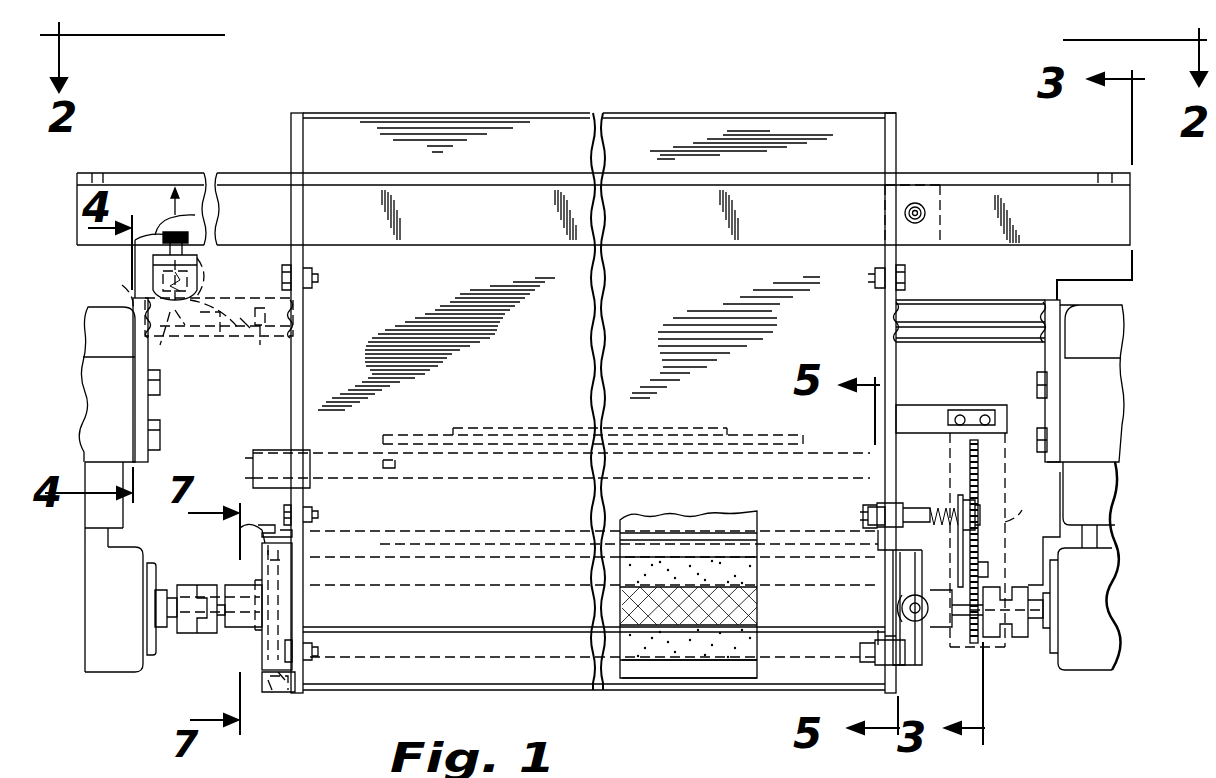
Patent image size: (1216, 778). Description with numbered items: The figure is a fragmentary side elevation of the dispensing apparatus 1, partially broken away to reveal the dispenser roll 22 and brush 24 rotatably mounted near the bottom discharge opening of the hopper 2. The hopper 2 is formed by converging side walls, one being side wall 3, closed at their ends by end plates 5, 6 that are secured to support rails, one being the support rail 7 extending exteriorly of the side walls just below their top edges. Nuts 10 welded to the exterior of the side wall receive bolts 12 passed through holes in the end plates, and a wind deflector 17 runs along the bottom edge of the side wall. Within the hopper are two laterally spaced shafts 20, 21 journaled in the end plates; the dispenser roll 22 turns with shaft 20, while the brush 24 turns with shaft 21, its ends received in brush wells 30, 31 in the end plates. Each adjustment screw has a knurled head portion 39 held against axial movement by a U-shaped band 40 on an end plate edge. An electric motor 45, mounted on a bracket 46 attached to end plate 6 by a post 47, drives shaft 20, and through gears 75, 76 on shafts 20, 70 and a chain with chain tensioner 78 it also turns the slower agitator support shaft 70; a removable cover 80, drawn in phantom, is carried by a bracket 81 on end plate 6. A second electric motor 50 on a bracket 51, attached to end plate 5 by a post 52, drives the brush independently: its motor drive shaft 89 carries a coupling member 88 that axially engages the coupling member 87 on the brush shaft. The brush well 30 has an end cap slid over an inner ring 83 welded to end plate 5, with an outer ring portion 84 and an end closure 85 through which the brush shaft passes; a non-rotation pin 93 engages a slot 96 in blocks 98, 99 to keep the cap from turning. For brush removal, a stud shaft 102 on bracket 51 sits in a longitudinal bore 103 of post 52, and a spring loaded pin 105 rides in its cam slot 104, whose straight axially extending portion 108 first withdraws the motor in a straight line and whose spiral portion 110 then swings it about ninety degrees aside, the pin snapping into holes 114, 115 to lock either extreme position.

The dispensing apparatus 1 is at (398, 113).
The hopper 2 is at (868, 160).
The side wall 3 is at (683, 125).
The end plate 5 is at (291, 407).
The end plate 6 is at (896, 367).
The support rail 7 is at (1033, 190).
The nut 10 is at (308, 268).
The bolt 12 is at (282, 272).
The wind deflector 17 is at (415, 680).
The shaft 20 is at (960, 645).
The shaft 21 is at (218, 630).
The dispenser roll 22 is at (695, 618).
The brush 24 is at (722, 652).
The brush well 30 is at (262, 660).
The brush well 31 is at (930, 652).
The knurled head portion 39 is at (887, 628).
The U-shaped band 40 is at (890, 610).
The electric motor 45 is at (1118, 393).
The bracket 46 is at (1060, 325).
The post 47 is at (962, 300).
The second electric motor 50 is at (95, 375).
The bracket 51 is at (133, 280).
The post 52 is at (215, 345).
The agitator support shaft 70 is at (332, 458).
The gear 75 is at (988, 648).
The gear 76 is at (990, 460).
The chain tensioner 78 is at (987, 522).
The removable cover 80 is at (1025, 510).
The bracket 81 is at (960, 405).
The inner ring 83 is at (292, 700).
The outer ring portion 84 is at (270, 692).
The end closure 85 is at (262, 640).
The coupling member 87 is at (205, 585).
The coupling member 88 is at (175, 625).
The motor drive shaft 89 is at (160, 578).
The non-rotation pin 93 is at (262, 550).
The slot 96 is at (280, 535).
The block 98 is at (240, 535).
The block 99 is at (280, 690).
The stud shaft 102 is at (175, 340).
The longitudinal bore 103 is at (272, 342).
The cam slot 104 is at (215, 302).
The spring loaded pin 105 is at (185, 240).
The straight axially extending portion 108 is at (200, 280).
The spiral portion 110 is at (302, 312).
The hole 114 is at (124, 298).
The hole 115 is at (298, 335).